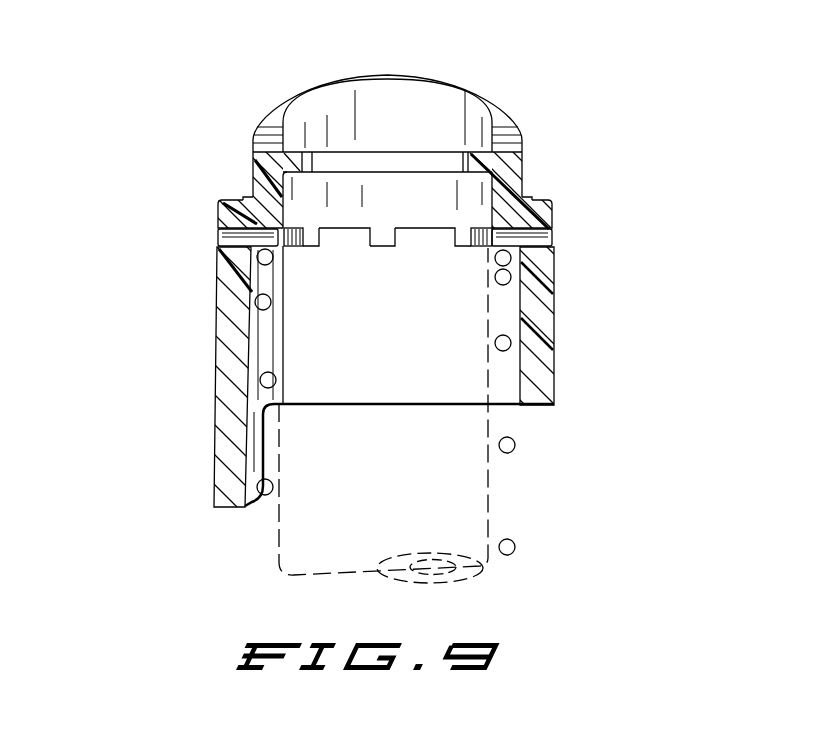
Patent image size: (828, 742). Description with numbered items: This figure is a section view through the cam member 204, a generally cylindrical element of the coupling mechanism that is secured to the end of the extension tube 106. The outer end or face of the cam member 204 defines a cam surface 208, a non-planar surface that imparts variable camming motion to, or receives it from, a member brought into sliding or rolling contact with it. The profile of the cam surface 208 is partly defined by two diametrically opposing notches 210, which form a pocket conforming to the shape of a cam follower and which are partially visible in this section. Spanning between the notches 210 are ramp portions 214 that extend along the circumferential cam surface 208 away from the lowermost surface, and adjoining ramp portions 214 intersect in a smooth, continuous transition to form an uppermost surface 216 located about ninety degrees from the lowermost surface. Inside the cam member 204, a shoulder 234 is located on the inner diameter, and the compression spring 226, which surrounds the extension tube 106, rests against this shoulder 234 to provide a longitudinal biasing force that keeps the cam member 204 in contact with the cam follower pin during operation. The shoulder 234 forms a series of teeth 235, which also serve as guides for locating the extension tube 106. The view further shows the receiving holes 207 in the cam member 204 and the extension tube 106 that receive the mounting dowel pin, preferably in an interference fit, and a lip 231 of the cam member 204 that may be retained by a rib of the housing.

The extension tube 106 is at (278, 537).
The cam member 204 is at (575, 294).
The receiving holes 207 is at (218, 228).
The cam surface 208 is at (488, 107).
The notches 210 is at (275, 142).
The ramp portions 214 is at (277, 117).
The uppermost surface 216 is at (383, 76).
The compression spring 226 is at (517, 448).
The lip 231 is at (245, 198).
The shoulder 234 is at (391, 248).
The teeth 235 is at (371, 237).